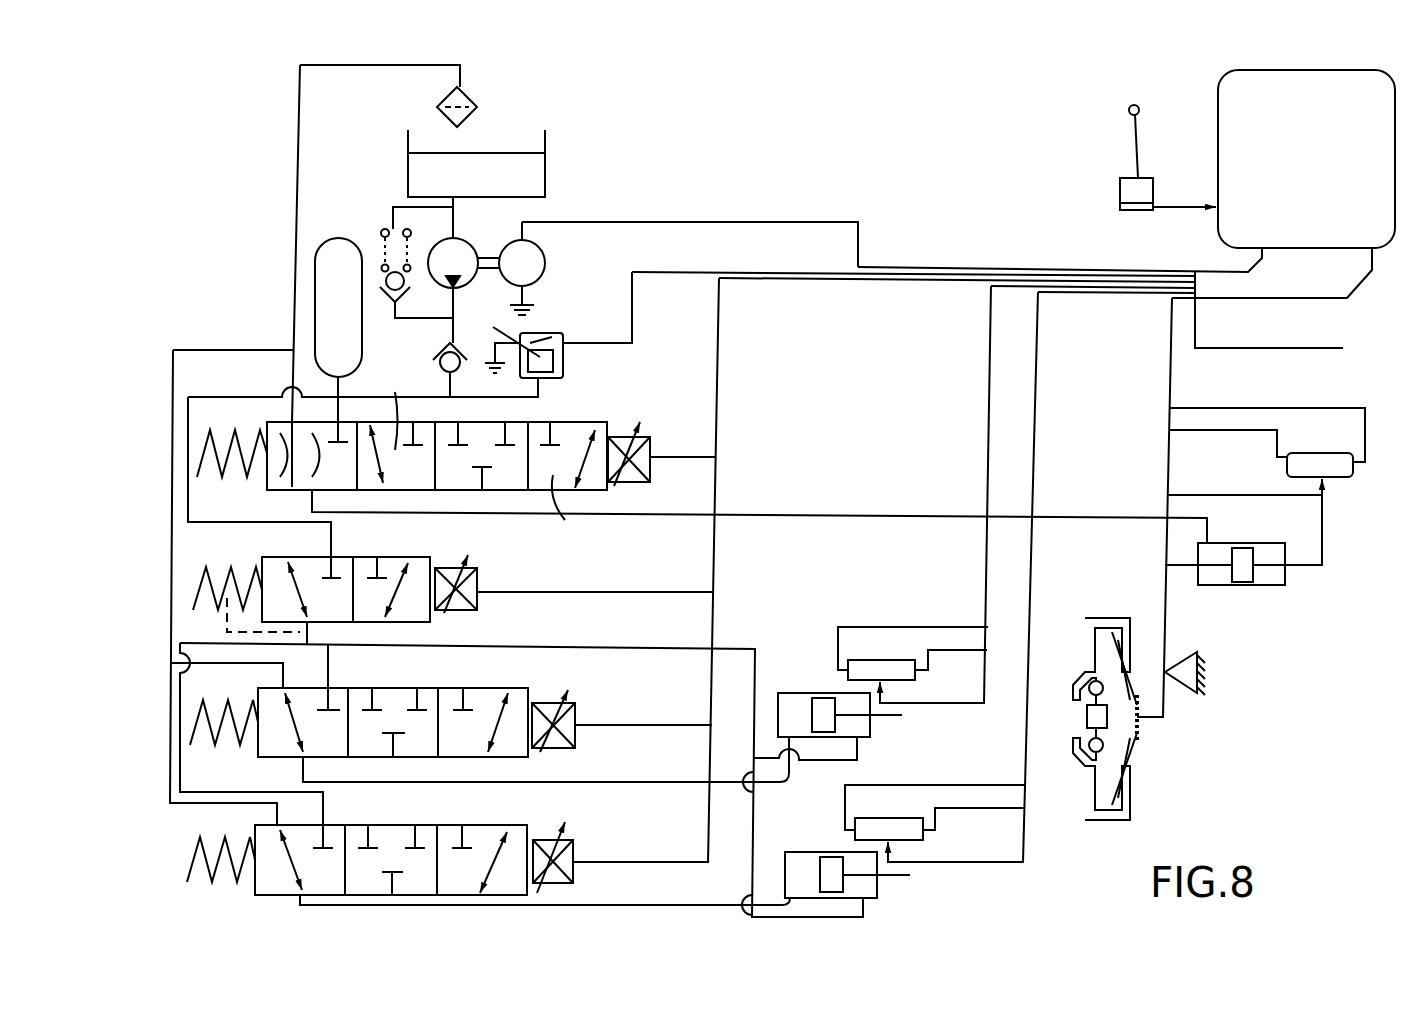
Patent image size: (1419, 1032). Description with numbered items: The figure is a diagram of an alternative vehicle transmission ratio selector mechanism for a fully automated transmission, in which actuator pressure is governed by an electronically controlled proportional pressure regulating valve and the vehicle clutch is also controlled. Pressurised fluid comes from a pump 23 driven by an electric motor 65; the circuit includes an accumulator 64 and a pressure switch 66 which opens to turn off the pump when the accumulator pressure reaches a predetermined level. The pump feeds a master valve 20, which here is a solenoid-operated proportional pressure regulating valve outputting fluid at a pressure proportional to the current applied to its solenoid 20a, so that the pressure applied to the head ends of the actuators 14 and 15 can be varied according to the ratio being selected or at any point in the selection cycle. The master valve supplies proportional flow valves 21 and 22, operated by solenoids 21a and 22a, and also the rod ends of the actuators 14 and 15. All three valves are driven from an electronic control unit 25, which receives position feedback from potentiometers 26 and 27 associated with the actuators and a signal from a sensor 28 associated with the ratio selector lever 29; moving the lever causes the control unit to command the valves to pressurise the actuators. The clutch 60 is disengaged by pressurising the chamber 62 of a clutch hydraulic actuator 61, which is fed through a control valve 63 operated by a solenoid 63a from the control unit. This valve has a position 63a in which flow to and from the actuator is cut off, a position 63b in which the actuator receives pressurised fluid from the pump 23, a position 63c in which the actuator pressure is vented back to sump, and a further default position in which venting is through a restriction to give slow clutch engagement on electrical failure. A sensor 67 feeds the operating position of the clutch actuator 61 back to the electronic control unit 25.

The actuator 14 is at (797, 701).
The actuator 15 is at (808, 865).
The master valve 20 is at (385, 565).
The solenoid 20a is at (470, 600).
The proportional flow valve 21 is at (395, 698).
The solenoid 21a is at (577, 715).
The proportional flow valve 22 is at (392, 842).
The solenoid 22a is at (575, 853).
The pump 23 is at (462, 258).
The electronic control unit 25 is at (1306, 159).
The potentiometer 26 is at (878, 660).
The potentiometer 27 is at (900, 818).
The sensor 28 is at (1125, 205).
The ratio selector lever 29 is at (1133, 146).
The clutch 60 is at (1104, 719).
The clutch hydraulic actuator 61 is at (1274, 577).
The chamber 62 is at (1218, 575).
The control valve 63 is at (580, 418).
The solenoid 63a is at (313, 489).
The valve position 63b is at (589, 516).
The valve position 63c is at (405, 402).
The accumulator 64 is at (330, 303).
The electric motor 65 is at (547, 265).
The pressure switch 66 is at (548, 333).
The sensor 67 is at (1290, 462).